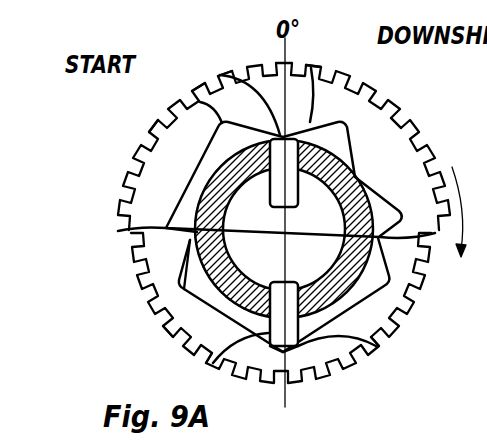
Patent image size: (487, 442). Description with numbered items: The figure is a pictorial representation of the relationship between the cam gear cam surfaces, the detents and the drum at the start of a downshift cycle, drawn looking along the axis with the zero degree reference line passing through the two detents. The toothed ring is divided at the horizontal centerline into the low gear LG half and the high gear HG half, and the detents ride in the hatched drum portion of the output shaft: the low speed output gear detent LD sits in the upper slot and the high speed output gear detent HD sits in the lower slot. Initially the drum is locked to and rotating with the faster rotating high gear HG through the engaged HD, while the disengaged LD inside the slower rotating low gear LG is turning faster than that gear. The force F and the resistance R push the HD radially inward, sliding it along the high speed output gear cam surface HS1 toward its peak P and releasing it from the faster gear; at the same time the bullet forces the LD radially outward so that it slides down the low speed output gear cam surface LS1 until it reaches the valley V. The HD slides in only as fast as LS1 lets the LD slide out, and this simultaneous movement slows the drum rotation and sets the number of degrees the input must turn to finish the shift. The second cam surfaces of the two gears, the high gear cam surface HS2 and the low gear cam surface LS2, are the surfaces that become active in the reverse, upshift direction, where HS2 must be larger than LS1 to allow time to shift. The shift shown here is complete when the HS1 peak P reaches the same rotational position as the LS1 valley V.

The low speed output gear detent LD is at (280, 197).
The high speed output gear detent HD is at (291, 291).
The valley V is at (192, 99).
The low gear range LG is at (173, 172).
The peak P is at (227, 84).
The low speed output gear cam surface #1 LS1 is at (318, 72).
The low shift position 2 LS2 is at (357, 143).
The resistance R is at (259, 301).
The high gear range HG is at (168, 336).
The high speed output gear cam surface #2 HS2 is at (212, 363).
The high speed output gear cam surface #1 HS1 is at (377, 346).
The force F is at (297, 348).